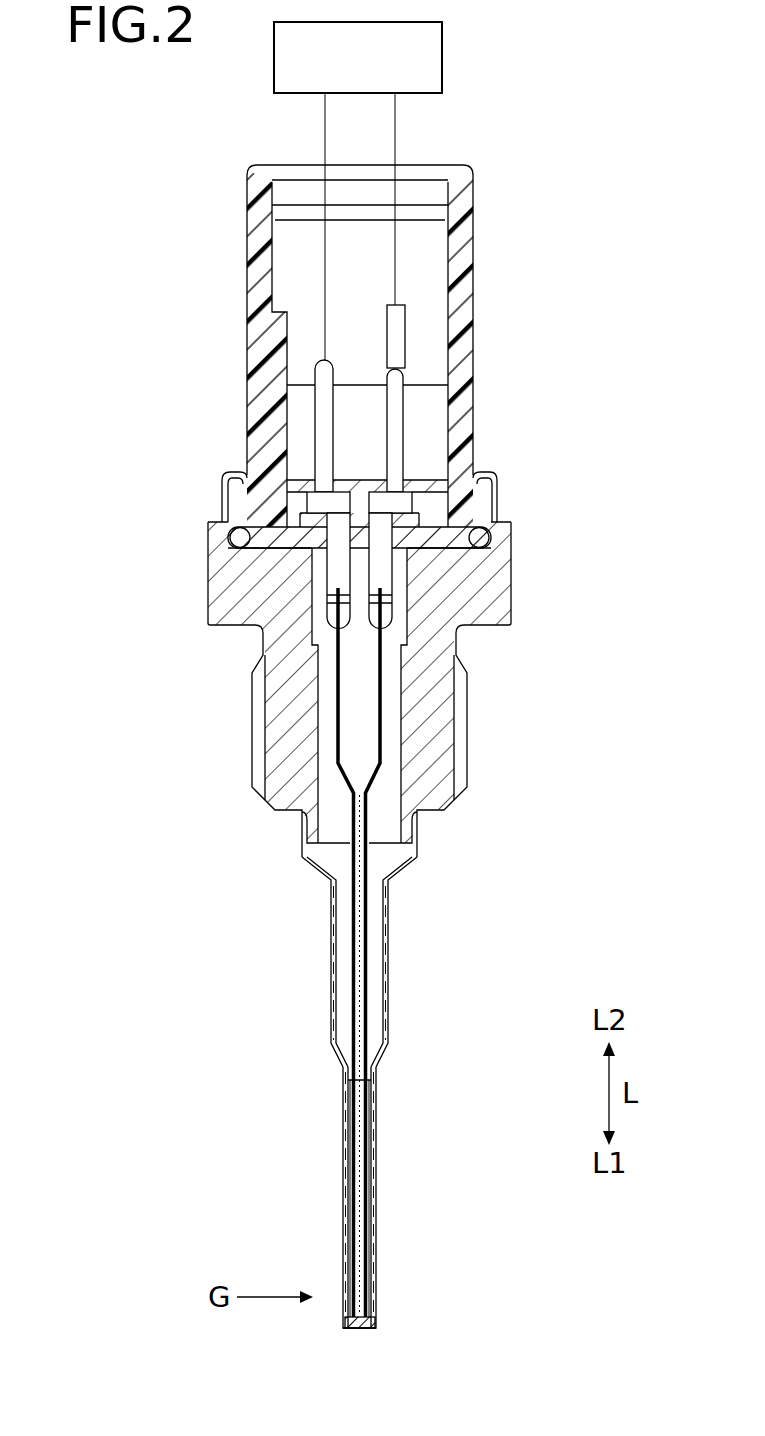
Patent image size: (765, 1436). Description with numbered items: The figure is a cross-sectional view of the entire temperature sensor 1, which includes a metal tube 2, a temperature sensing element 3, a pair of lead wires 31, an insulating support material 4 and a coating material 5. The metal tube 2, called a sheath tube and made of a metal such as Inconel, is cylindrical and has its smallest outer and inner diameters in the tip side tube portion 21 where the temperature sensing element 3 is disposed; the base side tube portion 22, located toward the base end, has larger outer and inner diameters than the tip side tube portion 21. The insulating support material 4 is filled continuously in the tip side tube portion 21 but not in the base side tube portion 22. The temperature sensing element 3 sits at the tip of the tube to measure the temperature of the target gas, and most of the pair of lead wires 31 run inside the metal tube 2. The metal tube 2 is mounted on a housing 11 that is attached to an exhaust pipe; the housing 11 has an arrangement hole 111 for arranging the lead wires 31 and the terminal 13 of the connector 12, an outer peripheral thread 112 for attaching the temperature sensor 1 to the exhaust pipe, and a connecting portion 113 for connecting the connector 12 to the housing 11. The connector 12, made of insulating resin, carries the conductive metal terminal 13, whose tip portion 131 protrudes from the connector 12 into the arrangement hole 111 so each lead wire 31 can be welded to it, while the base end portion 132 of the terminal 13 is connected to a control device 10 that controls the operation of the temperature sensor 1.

The temperature sensor 1 is at (549, 171).
The control device 10 is at (413, 57).
The housing 11 is at (344, 685).
The arrangement hole 111 is at (323, 700).
The outer peripheral thread 112 is at (457, 705).
The connecting portion 113 is at (222, 540).
The connector 12 is at (460, 345).
The terminal 13 is at (378, 467).
The tip portion of terminal 131 is at (378, 570).
The base end portion of terminal 132 is at (395, 398).
The metal tube 2 is at (348, 1115).
The tip side tube portion 21 is at (347, 1196).
The base side tube portion 22 is at (331, 922).
The temperature sensing element 3 is at (377, 1329).
The lead wires 31 is at (367, 970).
The insulating support material 4 is at (347, 1128).
The coating material 5 is at (343, 1329).